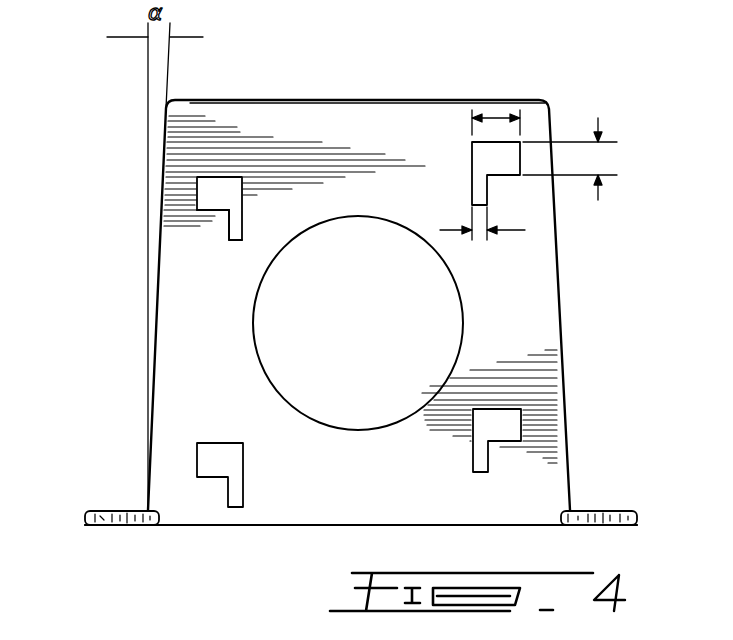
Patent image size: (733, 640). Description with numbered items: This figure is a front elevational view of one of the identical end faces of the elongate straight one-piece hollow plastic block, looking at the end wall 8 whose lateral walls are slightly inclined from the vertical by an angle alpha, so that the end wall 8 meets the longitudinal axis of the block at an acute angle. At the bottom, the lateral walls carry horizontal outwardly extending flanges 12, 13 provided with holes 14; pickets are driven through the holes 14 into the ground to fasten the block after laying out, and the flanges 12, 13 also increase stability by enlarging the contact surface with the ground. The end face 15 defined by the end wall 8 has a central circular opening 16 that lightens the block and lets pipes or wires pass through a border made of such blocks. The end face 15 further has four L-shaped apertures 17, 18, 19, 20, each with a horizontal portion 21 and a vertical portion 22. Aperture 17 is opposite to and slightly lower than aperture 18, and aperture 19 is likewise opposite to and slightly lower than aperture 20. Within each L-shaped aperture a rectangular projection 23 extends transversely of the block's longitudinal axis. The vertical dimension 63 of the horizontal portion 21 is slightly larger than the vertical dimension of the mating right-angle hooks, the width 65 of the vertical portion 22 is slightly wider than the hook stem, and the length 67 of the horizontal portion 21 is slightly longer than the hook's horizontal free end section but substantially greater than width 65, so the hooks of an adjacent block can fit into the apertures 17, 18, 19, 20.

The end wall 8 is at (368, 128).
The flange 12 is at (88, 524).
The flange 13 is at (623, 513).
The holes 14 is at (128, 527).
The end face 15 is at (303, 478).
The central circular opening 16 is at (438, 319).
The L-shaped aperture 17 is at (200, 200).
The L-shaped aperture 18 is at (503, 157).
The L-shaped aperture 19 is at (212, 455).
The L-shaped aperture 20 is at (510, 420).
The horizontal portion 21 is at (215, 183).
The vertical portion 22 is at (232, 228).
The rectangular projection 23 is at (212, 219).
The vertical dimension 63 is at (603, 157).
The width 65 is at (482, 235).
The length 67 is at (495, 116).